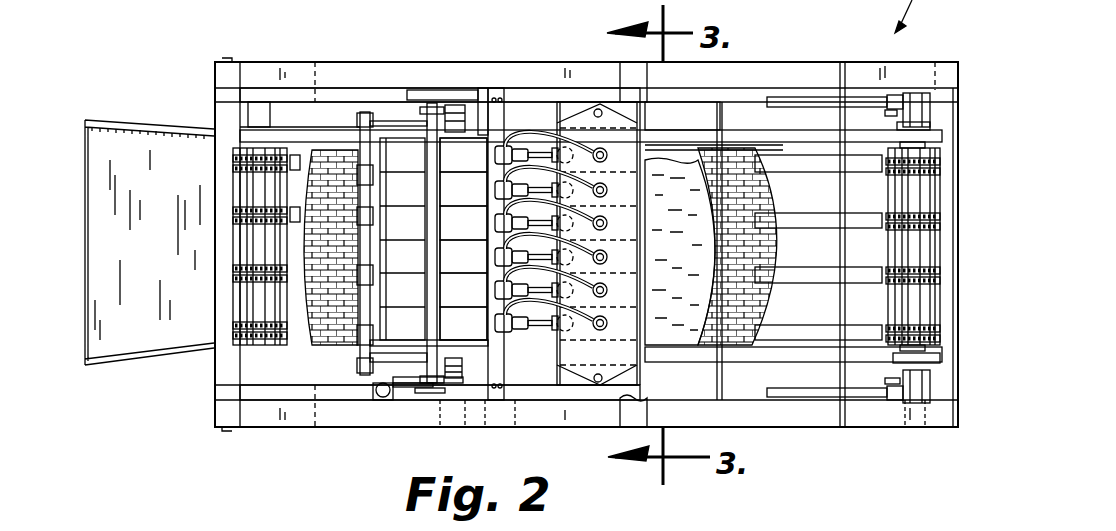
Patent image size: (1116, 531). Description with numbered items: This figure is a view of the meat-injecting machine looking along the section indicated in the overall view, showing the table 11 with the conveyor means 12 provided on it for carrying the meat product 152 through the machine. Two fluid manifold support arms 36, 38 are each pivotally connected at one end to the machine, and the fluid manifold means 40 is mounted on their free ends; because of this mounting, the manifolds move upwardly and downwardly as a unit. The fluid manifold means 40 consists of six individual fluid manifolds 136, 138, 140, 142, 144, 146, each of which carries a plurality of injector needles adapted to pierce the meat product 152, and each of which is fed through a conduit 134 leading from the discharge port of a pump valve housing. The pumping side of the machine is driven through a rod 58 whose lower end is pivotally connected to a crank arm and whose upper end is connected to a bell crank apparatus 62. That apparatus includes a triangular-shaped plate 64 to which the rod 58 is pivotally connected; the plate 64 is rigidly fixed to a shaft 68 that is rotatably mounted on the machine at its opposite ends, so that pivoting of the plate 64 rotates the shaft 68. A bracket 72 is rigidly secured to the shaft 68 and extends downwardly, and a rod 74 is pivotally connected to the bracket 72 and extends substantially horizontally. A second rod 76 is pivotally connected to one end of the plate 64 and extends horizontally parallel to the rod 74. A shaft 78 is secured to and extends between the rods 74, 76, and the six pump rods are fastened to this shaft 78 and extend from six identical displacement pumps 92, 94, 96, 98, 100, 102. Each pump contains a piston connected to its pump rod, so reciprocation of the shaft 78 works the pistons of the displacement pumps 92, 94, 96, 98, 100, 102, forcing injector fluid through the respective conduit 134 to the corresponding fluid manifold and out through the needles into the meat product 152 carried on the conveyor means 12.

The table 11 is at (763, 124).
The conveyor means 12 is at (815, 148).
The fluid manifold support arm 36 is at (300, 110).
The fluid manifold support arm 38 is at (305, 372).
The fluid manifold means 40 is at (650, 118).
The rod 58 is at (385, 395).
The bell crank apparatus 62 is at (397, 390).
The triangular-shaped plate 64 is at (431, 382).
The shaft 68 is at (428, 205).
The bracket 72 is at (440, 100).
The rod 74 is at (393, 118).
The rod 76 is at (370, 388).
The shaft 78 is at (366, 110).
The displacement pump 92 is at (468, 165).
The displacement pump 94 is at (468, 199).
The displacement pump 96 is at (468, 233).
The displacement pump 98 is at (468, 266).
The displacement pump 100 is at (468, 301).
The displacement pump 102 is at (468, 334).
The conduit 134 is at (540, 125).
The fluid manifold 136 is at (567, 151).
The fluid manifold 138 is at (567, 184).
The fluid manifold 140 is at (567, 217).
The fluid manifold 142 is at (567, 251).
The fluid manifold 144 is at (567, 287).
The fluid manifold 146 is at (567, 320).
The meat product 152 is at (684, 259).